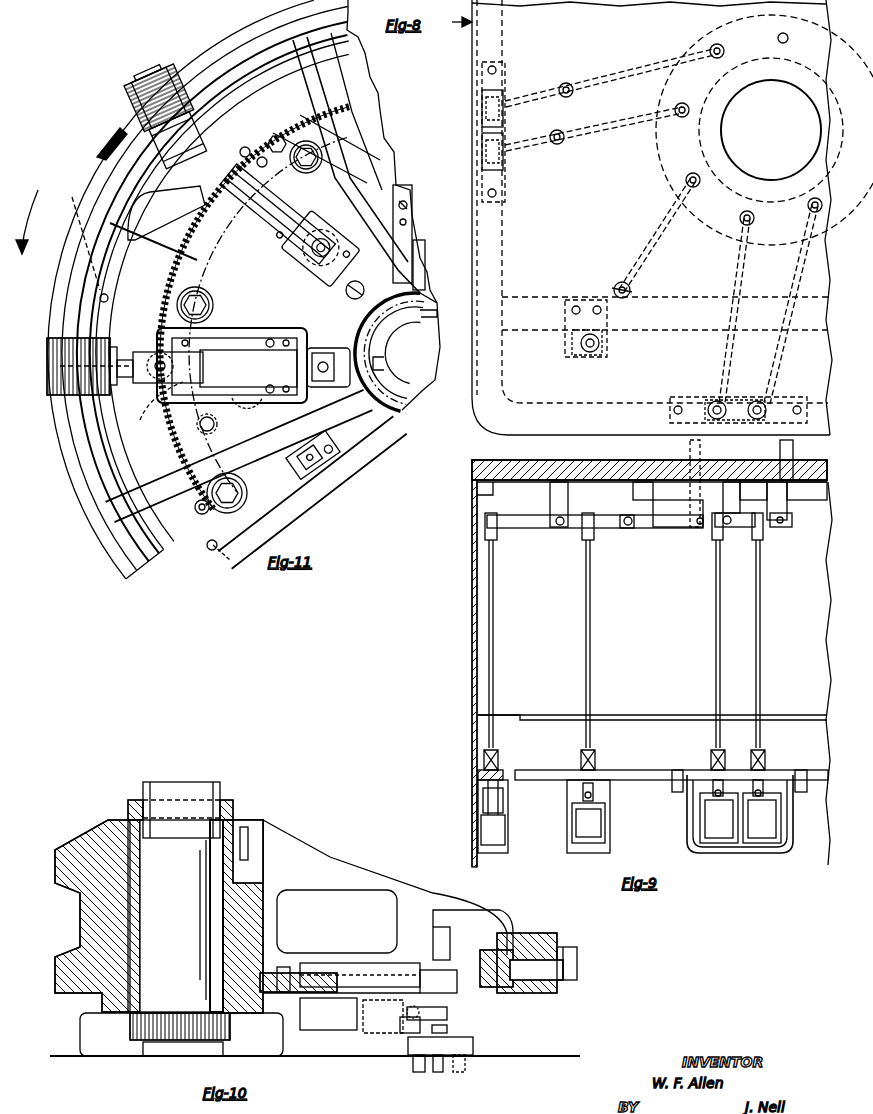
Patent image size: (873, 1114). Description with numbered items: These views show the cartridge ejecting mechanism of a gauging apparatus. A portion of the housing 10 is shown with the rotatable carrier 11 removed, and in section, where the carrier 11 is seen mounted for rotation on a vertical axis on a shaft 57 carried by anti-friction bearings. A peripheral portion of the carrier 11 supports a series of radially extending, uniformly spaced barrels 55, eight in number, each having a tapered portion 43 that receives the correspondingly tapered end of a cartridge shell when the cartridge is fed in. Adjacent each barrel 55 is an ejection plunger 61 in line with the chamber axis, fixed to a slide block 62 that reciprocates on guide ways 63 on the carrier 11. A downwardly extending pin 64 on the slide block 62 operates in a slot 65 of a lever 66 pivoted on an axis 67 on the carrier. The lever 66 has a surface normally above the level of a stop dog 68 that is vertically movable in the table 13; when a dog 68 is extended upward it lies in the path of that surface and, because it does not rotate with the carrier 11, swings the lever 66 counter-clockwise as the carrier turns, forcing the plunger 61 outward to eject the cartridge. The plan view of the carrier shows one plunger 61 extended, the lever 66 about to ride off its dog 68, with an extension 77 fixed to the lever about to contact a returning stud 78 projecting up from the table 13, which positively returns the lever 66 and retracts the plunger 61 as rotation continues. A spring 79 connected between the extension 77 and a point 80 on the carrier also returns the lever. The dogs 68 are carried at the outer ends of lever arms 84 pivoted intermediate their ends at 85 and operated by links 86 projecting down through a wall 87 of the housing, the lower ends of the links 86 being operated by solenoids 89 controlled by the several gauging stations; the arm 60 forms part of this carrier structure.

In FIG. 8, the housing 10 is at (472, 68).
In FIG. 11, the carrier 11 is at (220, 53).
In FIG. 10, the carrier 11 is at (513, 930).
In FIG. 9, the table 13 is at (520, 462).
In FIG. 10, the table 13 is at (375, 1056).
In FIG. 10, the tapered portion 43 is at (533, 993).
In FIG. 11, the barrels 55 is at (178, 80).
In FIG. 10, the barrels 55 is at (563, 982).
In FIG. 10, the shaft 57 is at (169, 919).
In FIG. 11, the spoke arm 60 is at (300, 460).
In FIG. 11, the ejection plunger 61 is at (268, 205).
In FIG. 11, the slide block 62 is at (150, 360).
In FIG. 11, the guide ways 63 is at (215, 340).
In FIG. 11, the pin 64 is at (155, 372).
In FIG. 11, the slot 65 is at (142, 422).
In FIG. 11, the lever 66 is at (235, 470).
In FIG. 11, the axis 67 is at (245, 500).
In FIG. 11, the stop dog 68 is at (365, 183).
In FIG. 8, the stop dog 68 is at (720, 137).
In FIG. 9, the stop dog 68 is at (687, 503).
In FIG. 10, the stop dog 68 is at (447, 1032).
In FIG. 11, the extension 77 is at (126, 378).
In FIG. 11, the returning stud 78 is at (246, 147).
In FIG. 11, the spring 79 is at (217, 232).
In FIG. 10, the spring 79 is at (424, 1015).
In FIG. 11, the point 80 is at (322, 148).
In FIG. 10, the point 80 is at (450, 1007).
In FIG. 8, the lever arms 84 is at (653, 116).
In FIG. 9, the lever arms 84 is at (653, 528).
In FIG. 8, the pivot 85 is at (620, 282).
In FIG. 9, the pivot 85 is at (627, 526).
In FIG. 9, the links 86 is at (498, 688).
In FIG. 9, the wall 87 is at (618, 770).
In FIG. 8, the solenoids 89 is at (504, 160).
In FIG. 9, the solenoids 89 is at (717, 823).